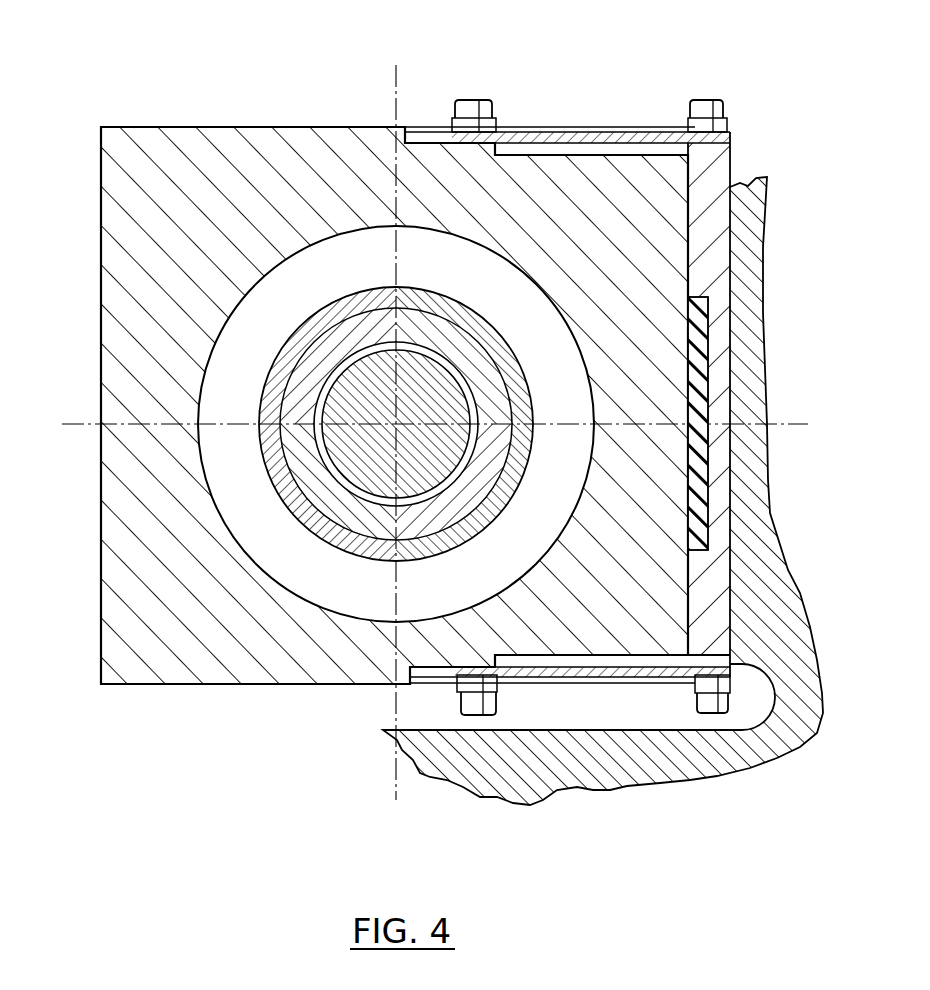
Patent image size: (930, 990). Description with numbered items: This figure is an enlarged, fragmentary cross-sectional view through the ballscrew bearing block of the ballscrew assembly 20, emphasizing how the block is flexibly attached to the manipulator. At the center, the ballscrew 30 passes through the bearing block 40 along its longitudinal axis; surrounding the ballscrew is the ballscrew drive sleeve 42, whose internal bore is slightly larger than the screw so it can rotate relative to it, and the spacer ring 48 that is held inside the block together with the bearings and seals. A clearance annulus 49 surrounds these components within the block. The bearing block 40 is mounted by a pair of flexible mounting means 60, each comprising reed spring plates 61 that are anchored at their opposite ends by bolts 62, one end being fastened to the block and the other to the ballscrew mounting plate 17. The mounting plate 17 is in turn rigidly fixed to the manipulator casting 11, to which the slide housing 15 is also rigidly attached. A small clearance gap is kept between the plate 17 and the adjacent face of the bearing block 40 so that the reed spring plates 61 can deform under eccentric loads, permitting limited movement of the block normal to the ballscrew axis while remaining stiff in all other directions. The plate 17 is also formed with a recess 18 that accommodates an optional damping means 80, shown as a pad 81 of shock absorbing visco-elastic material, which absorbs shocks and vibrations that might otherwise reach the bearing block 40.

The ballscrew assembly 20 is at (125, 87).
The ballscrew bearing block 40 is at (212, 153).
The ballscrew drive sleeve 42 is at (337, 333).
The spacer ring 48 is at (282, 370).
The ballscrew 30 is at (373, 367).
The clearance annulus 49 is at (315, 590).
The flexible mounting means 60 is at (570, 92).
The reed spring plates 61 is at (600, 140).
The bolts 62 is at (477, 108).
The ballscrew mounting plate 17 is at (718, 577).
The recess 18 is at (708, 483).
The damping means 80 is at (724, 321).
The pad 81 is at (708, 395).
The manipulator casting 11 is at (760, 512).
The slide housing 15 is at (563, 798).